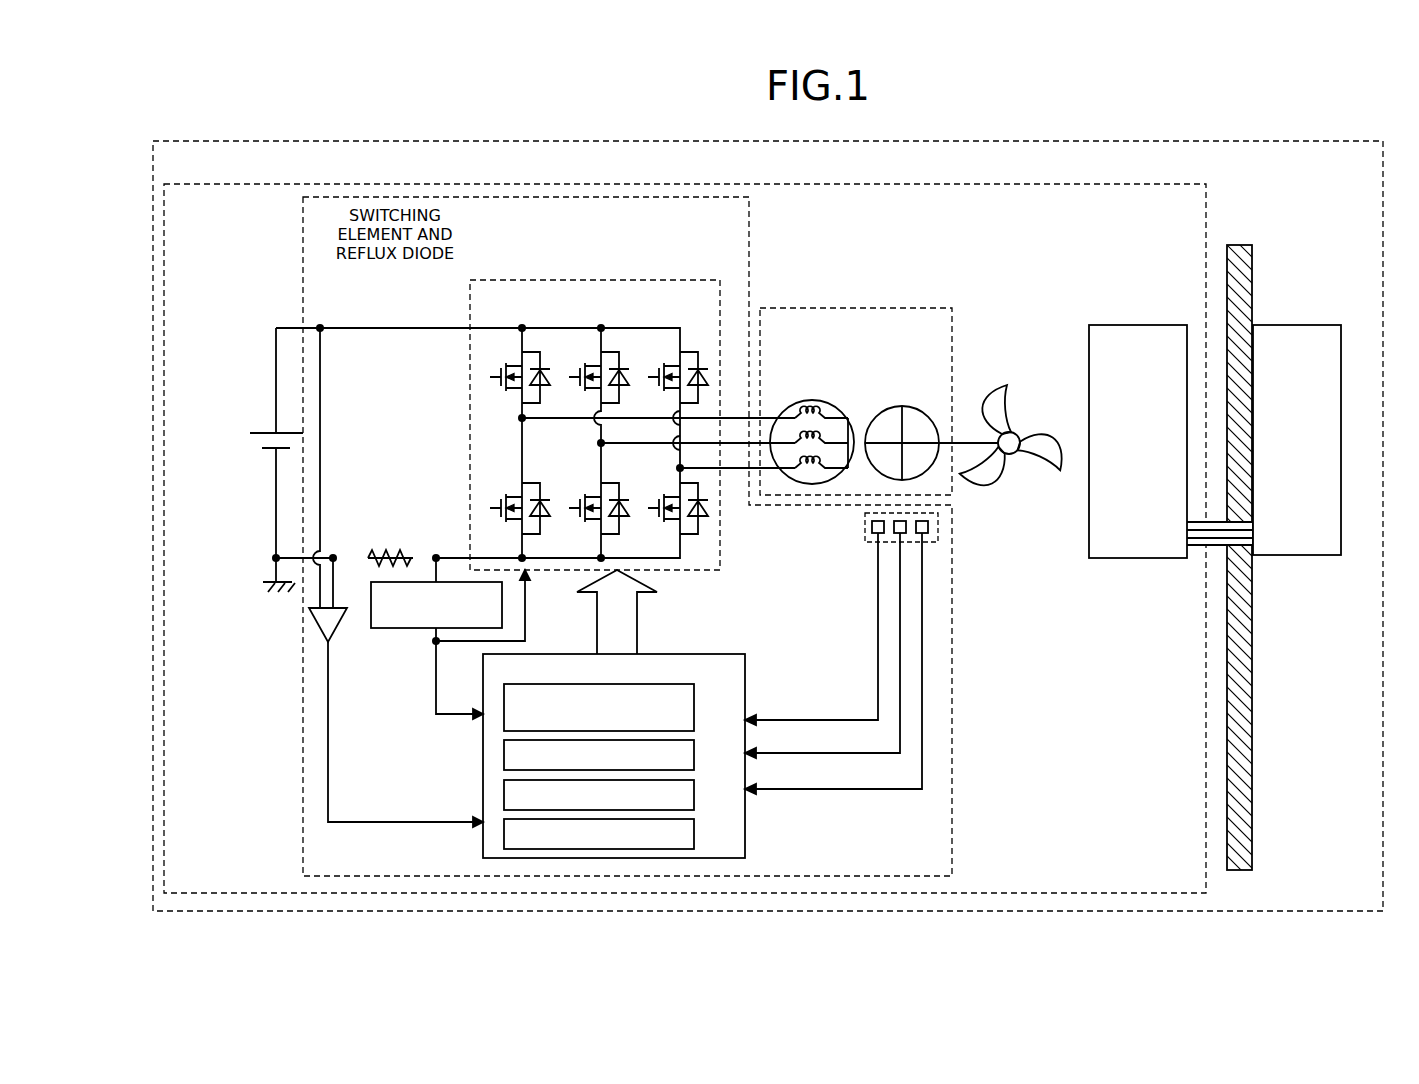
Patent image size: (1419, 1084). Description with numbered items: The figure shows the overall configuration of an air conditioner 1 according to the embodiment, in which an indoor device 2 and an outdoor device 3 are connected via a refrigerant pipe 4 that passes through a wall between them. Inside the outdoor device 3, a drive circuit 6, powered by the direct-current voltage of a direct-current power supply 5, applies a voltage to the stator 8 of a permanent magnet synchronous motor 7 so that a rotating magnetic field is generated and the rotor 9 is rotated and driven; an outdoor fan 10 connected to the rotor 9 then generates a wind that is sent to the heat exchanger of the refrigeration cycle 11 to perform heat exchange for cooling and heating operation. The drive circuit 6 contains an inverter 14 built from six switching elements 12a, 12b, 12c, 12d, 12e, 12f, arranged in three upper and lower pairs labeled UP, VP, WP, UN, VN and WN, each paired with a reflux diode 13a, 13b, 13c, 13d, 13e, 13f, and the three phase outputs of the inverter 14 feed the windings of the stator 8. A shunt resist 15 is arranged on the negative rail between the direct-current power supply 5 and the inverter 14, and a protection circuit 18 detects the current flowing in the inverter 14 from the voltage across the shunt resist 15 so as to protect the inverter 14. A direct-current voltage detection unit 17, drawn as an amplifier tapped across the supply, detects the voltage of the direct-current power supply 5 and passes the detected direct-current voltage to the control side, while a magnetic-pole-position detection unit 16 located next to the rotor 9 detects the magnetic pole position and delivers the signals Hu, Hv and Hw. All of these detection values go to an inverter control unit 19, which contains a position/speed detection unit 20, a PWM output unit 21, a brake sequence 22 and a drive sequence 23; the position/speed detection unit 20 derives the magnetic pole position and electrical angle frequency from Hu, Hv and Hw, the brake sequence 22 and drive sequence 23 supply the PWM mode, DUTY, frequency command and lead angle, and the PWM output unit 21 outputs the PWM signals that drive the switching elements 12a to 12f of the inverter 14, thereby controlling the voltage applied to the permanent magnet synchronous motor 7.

The air conditioner 1 is at (1152, 141).
The indoor device 2 is at (1298, 325).
The outdoor device 3 is at (1152, 184).
The refrigerant pipe 4 is at (1207, 552).
The direct-current power supply 5 is at (270, 450).
The drive circuit 6 is at (751, 239).
The permanent magnet synchronous motor 7 is at (904, 308).
The stator 8 is at (803, 487).
The rotor 9 is at (927, 470).
The outdoor fan 10 is at (1005, 385).
The refrigeration cycle 11 is at (1146, 325).
The switching element 12a is at (519, 348).
The switching element 12b is at (601, 346).
The switching element 12c is at (688, 336).
The switching element 12d is at (506, 533).
The switching element 12e is at (603, 545).
The switching element 12f is at (693, 548).
The reflux diode 13a is at (464, 342).
The reflux diode 13b is at (569, 324).
The reflux diode 13c is at (756, 342).
The reflux diode 13d is at (484, 515).
The reflux diode 13e is at (649, 555).
The reflux diode 13f is at (717, 555).
The inverter 14 is at (680, 280).
The shunt resist 15 is at (375, 548).
The magnetic-pole-position detection unit 16 is at (940, 542).
The direct-current voltage detection unit 17 is at (333, 643).
The protection circuit 18 is at (398, 632).
The inverter control unit 19 is at (686, 654).
The position/speed detection unit 20 is at (694, 709).
The PWM output unit 21 is at (694, 757).
The brake sequence 22 is at (694, 797).
The drive sequence 23 is at (694, 835).